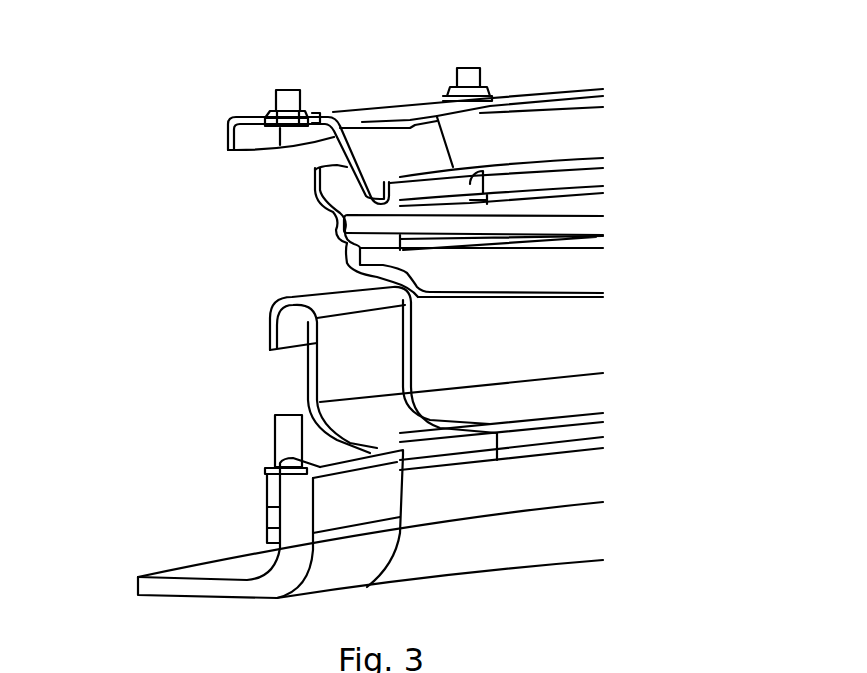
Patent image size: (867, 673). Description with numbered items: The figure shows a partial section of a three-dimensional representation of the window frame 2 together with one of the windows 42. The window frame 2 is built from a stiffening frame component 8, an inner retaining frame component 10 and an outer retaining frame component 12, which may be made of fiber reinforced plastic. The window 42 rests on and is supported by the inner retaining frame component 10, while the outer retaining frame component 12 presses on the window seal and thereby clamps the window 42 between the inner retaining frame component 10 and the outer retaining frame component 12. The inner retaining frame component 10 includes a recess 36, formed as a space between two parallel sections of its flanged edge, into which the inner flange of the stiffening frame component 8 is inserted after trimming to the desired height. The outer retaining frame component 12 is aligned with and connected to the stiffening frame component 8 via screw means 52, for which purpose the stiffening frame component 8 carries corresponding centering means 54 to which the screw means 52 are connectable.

The window frame 2 is at (170, 157).
The stiffening frame component 8 is at (202, 590).
The inner retaining frame component 10 is at (582, 345).
The outer retaining frame component 12 is at (530, 128).
The recess 36 is at (286, 309).
The window 42 is at (606, 209).
The screw means 52 is at (287, 100).
The centering means 54 is at (267, 478).